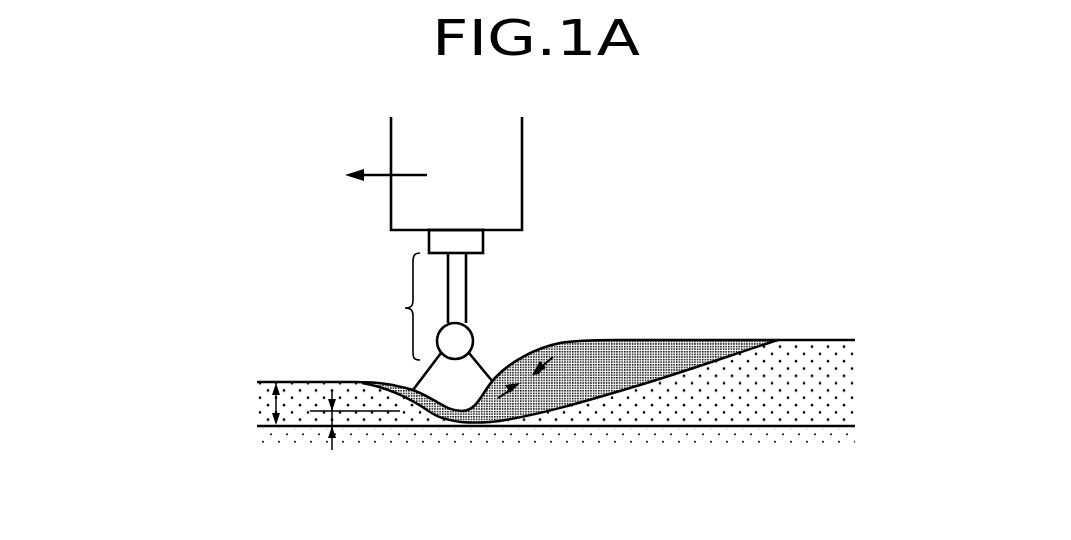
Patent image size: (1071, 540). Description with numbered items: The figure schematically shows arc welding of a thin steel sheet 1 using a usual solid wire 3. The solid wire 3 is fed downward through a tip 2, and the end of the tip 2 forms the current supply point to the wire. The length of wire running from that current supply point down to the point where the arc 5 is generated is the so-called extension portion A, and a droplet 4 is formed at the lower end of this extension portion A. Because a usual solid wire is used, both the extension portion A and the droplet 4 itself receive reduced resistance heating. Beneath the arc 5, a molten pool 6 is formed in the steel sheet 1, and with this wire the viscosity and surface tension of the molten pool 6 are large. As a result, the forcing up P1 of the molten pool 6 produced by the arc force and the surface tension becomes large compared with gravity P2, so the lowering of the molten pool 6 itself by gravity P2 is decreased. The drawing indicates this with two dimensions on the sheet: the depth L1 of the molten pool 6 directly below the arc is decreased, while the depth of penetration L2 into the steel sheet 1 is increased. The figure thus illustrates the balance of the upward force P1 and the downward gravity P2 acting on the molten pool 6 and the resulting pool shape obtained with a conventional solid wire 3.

The steel sheet 1 is at (718, 428).
The tip 2 is at (483, 240).
The solid wire 3 is at (466, 268).
The droplet 4 is at (470, 330).
The arc 5 is at (490, 366).
The molten pool 6 is at (648, 338).
The extension portion A is at (403, 306).
The depth of the molten pool directly below arc L1 is at (330, 418).
The depth of penetration L2 is at (273, 405).
The forcing up of the molten pool P1 is at (505, 400).
The gravity P2 is at (547, 365).